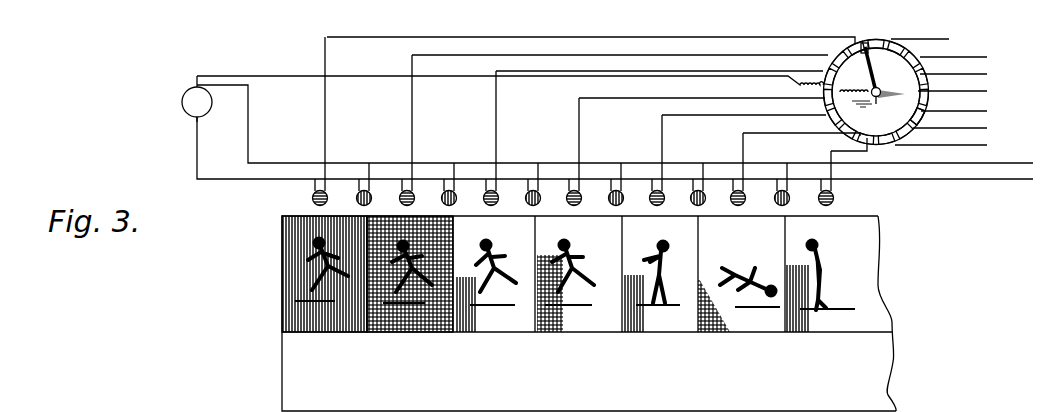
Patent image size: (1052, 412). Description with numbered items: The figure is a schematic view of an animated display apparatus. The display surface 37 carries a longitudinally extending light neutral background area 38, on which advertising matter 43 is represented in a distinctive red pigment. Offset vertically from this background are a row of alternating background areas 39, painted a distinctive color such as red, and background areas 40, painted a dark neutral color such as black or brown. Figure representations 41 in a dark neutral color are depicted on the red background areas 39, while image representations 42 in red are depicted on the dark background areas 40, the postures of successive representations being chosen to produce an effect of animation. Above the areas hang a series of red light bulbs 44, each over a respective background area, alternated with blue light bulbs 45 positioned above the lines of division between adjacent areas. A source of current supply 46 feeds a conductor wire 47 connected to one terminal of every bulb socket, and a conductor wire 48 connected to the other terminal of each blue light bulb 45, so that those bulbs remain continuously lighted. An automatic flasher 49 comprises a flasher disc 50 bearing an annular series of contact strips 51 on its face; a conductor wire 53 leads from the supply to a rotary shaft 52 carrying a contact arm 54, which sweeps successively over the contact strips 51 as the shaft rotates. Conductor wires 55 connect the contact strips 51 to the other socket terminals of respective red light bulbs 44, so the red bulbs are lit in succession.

The display surface 37 is at (872, 369).
The light neutral background area 38 is at (883, 401).
The background area 39 is at (301, 322).
The background area 40 is at (391, 319).
The figure representation 41 is at (310, 253).
The image representation 42 is at (425, 260).
The advertising matter 43 is at (727, 374).
The red light bulb 44 is at (312, 198).
The blue light bulb 45 is at (372, 190).
The source of current supply 46 is at (185, 110).
The conductor wire 47 is at (215, 180).
The conductor wire 48 is at (249, 123).
The automatic flasher 49 is at (901, 82).
The flasher disc 50 is at (898, 97).
The contact strip 51 is at (924, 117).
The rotary shaft 52 is at (874, 107).
The conductor wire 53 is at (370, 67).
The contact arm 54 is at (870, 77).
The conductor wire 55 is at (497, 138).